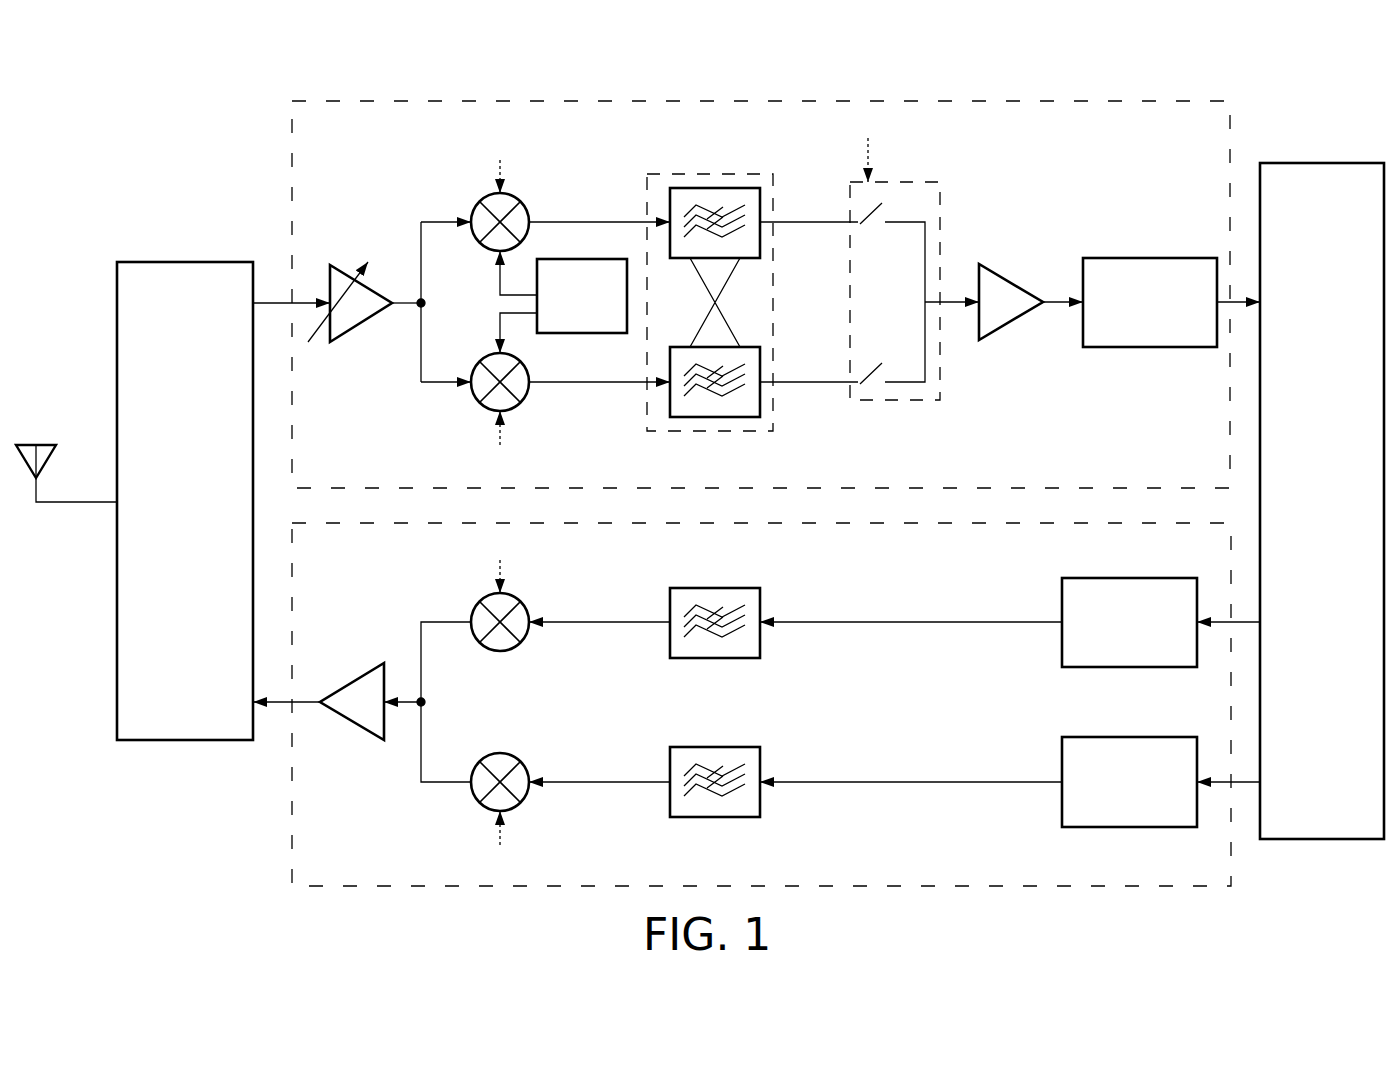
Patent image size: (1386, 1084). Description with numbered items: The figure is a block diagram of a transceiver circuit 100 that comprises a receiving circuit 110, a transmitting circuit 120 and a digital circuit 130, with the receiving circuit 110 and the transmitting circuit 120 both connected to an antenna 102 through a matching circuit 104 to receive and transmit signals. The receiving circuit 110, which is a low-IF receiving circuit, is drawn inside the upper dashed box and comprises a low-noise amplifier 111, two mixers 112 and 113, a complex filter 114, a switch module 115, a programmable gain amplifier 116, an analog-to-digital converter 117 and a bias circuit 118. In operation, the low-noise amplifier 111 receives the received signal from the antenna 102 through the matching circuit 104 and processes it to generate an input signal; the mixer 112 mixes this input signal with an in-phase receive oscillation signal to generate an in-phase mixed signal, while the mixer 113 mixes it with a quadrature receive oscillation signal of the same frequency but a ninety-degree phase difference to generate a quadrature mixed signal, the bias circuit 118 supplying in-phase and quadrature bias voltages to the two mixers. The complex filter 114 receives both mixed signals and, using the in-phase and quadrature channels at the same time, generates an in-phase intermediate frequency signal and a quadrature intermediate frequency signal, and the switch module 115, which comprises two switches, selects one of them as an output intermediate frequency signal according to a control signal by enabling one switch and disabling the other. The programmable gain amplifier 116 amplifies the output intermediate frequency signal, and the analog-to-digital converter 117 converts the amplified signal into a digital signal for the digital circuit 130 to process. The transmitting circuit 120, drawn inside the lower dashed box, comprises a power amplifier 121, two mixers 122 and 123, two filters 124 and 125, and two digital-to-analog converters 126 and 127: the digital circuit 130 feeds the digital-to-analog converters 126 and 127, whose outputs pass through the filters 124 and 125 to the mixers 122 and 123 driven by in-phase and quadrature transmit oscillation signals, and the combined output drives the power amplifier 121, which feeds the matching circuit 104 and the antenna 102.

The transceiver circuit 100 is at (178, 148).
The antenna 102 is at (38, 445).
The matching circuit 104 is at (163, 262).
The receiving circuit 110 is at (1045, 101).
The low-noise amplifier 111 is at (350, 265).
The mixer 112 is at (471, 204).
The mixer 113 is at (470, 404).
The complex filter 114 is at (712, 174).
The switch module 115 is at (905, 182).
The programmable gain amplifier 116 is at (1004, 277).
The analog-to-digital converter 117 is at (1143, 258).
The bias circuit 118 is at (578, 259).
The transmitting circuit 120 is at (1053, 890).
The power amplifier 121 is at (352, 683).
The mixer 122 is at (507, 651).
The mixer 123 is at (492, 758).
The filter 124 is at (723, 588).
The filter 125 is at (723, 747).
The digital-to-analog converter 126 is at (1120, 578).
The digital-to-analog converter 127 is at (1120, 737).
The digital circuit 130 is at (1328, 163).